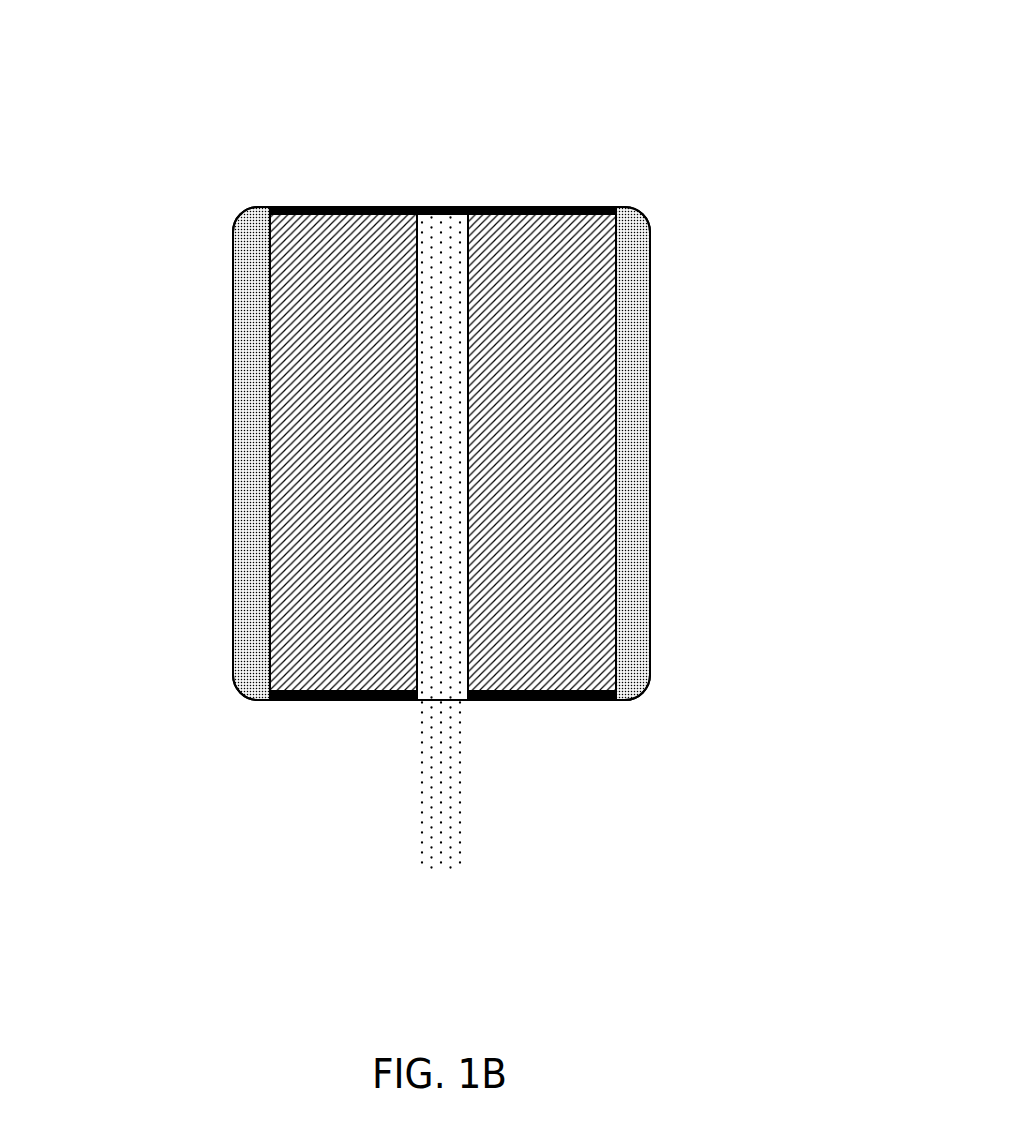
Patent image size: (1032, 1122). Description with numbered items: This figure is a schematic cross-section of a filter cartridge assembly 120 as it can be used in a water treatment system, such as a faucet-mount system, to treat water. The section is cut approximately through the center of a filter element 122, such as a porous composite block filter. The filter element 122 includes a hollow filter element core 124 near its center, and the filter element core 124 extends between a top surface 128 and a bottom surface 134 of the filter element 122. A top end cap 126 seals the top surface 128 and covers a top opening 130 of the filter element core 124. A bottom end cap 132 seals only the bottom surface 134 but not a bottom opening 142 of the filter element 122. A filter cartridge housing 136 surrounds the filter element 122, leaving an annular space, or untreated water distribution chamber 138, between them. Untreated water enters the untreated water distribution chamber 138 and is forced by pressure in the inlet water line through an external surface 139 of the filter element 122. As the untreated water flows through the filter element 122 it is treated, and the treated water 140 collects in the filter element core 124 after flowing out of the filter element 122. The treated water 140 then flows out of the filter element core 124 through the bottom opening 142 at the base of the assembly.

The filter cartridge assembly 120 is at (203, 152).
The filter element 122 is at (540, 400).
The filter element core 124 is at (449, 480).
The top end cap 126 is at (506, 207).
The top surface 128 is at (333, 220).
The top opening 130 is at (437, 232).
The bottom end cap 132 is at (353, 700).
The bottom surface 134 is at (327, 683).
The filter cartridge housing 136 is at (233, 633).
The untreated water distribution chamber 138 is at (255, 533).
The external surface 139 is at (265, 445).
The treated water 140 is at (437, 745).
The bottom opening 142 is at (450, 705).